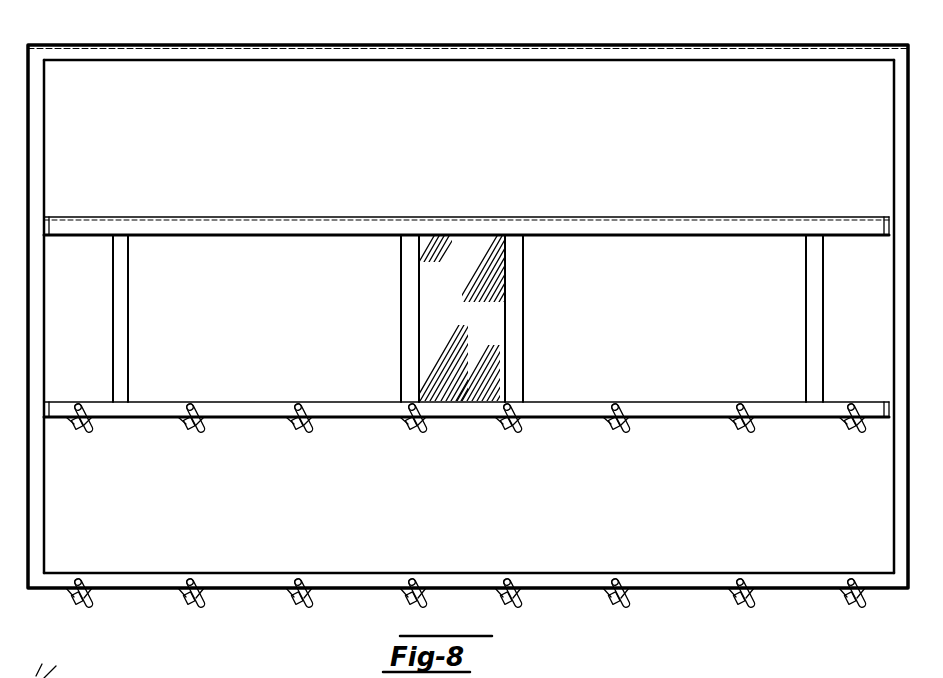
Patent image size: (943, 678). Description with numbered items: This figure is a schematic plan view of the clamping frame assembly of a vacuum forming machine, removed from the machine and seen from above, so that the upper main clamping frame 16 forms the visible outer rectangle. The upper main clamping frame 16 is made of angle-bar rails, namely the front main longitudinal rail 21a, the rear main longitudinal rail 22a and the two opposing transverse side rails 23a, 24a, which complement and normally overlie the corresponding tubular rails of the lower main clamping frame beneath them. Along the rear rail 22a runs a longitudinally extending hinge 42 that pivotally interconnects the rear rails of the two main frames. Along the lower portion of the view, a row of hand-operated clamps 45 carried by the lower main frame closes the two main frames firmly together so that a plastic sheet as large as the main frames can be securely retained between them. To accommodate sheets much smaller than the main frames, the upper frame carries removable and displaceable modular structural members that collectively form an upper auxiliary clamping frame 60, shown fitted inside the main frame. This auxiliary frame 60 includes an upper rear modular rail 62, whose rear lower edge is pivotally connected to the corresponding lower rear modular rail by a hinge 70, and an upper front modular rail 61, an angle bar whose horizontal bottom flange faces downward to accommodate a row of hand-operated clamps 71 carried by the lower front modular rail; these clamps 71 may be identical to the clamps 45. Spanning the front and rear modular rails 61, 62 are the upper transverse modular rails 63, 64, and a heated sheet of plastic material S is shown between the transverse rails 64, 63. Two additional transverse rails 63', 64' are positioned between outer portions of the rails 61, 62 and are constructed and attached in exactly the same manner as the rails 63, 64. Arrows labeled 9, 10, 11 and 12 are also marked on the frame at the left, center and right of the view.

The upper main clamping frame 16 is at (468, 329).
The hinge 42 is at (571, 45).
The rear main longitudinal rail 22a is at (353, 58).
The transverse side rail 23a is at (38, 500).
The transverse side rail 24a is at (898, 483).
The front main longitudinal rail 21a is at (269, 577).
The upper rear modular rail 62 is at (466, 202).
The hinge 70 is at (477, 217).
The upper auxiliary clamping frame 60 is at (466, 443).
The upper front modular rail 61 is at (373, 408).
The additional transverse rail 64' is at (149, 318).
The upper transverse modular rail 64 is at (380, 318).
The upper transverse modular rail 63 is at (541, 318).
The additional transverse rail 63' is at (782, 318).
The sheet of plastic material S is at (464, 311).
The section line 9 is at (362, 250).
The vacuum table 10 is at (552, 325).
The forming die 11 is at (98, 315).
The suction device 12 is at (870, 301).
The hand-operated clamps 71 is at (504, 438).
The hand-operated clamps 45 is at (182, 616).